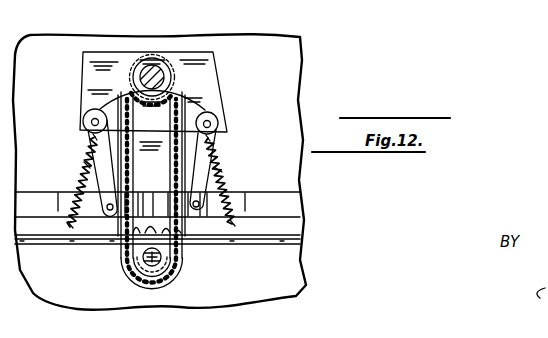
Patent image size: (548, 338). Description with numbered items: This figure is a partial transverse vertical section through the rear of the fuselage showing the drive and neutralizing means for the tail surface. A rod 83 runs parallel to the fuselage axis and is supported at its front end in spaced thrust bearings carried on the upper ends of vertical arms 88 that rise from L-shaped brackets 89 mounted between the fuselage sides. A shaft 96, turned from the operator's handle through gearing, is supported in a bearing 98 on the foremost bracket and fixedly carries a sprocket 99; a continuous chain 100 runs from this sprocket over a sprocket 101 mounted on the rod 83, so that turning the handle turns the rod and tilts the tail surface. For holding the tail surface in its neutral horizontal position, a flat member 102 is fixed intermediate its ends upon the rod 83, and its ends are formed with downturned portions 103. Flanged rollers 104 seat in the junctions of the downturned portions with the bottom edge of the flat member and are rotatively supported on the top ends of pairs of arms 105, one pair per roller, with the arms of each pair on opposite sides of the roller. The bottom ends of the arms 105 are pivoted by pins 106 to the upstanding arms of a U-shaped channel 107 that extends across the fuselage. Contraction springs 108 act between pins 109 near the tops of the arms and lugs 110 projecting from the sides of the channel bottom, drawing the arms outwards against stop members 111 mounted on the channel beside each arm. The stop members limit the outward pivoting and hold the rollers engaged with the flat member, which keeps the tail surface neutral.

The rod 83 is at (152, 72).
The arms 88 is at (173, 120).
The L-shaped brackets 89 is at (300, 232).
The shaft 96 is at (150, 260).
The bearing 98 is at (118, 257).
The sprocket 99 is at (120, 267).
The chain 100 is at (182, 157).
The sprocket 101 is at (155, 133).
The flat member 102 is at (97, 68).
The downturned portions 103 is at (83, 117).
The flanged rollers 104 is at (88, 110).
The arms 105 is at (83, 165).
The pins 106 is at (110, 212).
The U-shaped channel 107 is at (300, 208).
The contraction springs 108 is at (63, 197).
The pins 109 is at (92, 143).
The lugs 110 is at (72, 223).
The stop members 111 is at (83, 183).